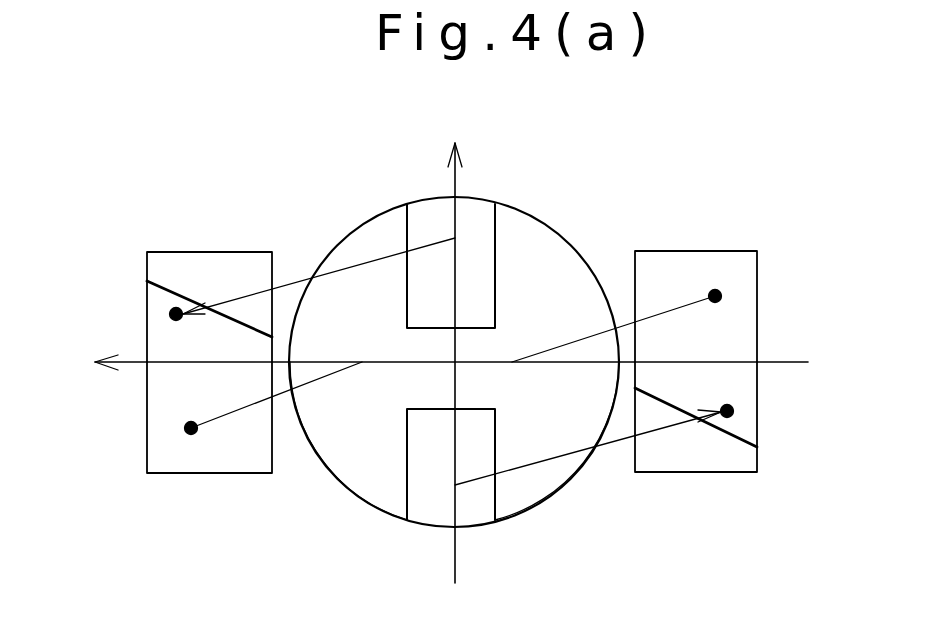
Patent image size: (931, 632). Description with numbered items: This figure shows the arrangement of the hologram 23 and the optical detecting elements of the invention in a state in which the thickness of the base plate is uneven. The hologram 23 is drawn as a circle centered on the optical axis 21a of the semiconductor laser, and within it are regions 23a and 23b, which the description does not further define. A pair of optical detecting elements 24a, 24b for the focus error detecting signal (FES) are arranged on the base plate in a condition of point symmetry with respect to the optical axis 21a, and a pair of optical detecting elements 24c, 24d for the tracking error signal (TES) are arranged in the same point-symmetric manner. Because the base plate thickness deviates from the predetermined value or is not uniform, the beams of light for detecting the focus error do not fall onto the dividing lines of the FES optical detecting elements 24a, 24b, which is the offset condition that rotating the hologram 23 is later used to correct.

The optical axis 21a is at (453, 365).
The hologram 23 is at (348, 211).
The hologram region 23a is at (497, 443).
The hologram region 23b is at (525, 498).
The optical detecting element 24a is at (198, 252).
The optical detecting element 24b is at (757, 460).
The optical detecting element 24c is at (220, 475).
The optical detecting element 24d is at (757, 323).